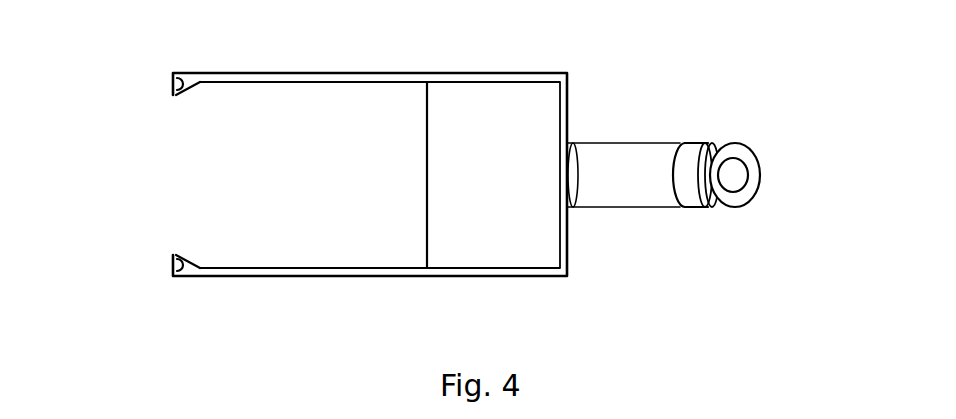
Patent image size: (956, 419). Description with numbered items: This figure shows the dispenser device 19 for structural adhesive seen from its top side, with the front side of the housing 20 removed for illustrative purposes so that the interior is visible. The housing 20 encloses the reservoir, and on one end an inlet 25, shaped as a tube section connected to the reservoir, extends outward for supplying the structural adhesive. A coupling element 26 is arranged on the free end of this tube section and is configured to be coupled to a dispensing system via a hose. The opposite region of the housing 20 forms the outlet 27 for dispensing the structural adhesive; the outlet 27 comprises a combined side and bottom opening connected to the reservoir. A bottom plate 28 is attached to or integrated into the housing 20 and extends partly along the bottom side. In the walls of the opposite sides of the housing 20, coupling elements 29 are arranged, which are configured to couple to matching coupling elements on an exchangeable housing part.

The dispenser device 19 is at (216, 41).
The housing 20 is at (440, 277).
The inlet 25 is at (641, 199).
The coupling element 26 is at (724, 126).
The outlet 27 is at (204, 183).
The bottom plate 28 is at (507, 188).
The coupling elements 29 is at (166, 86).